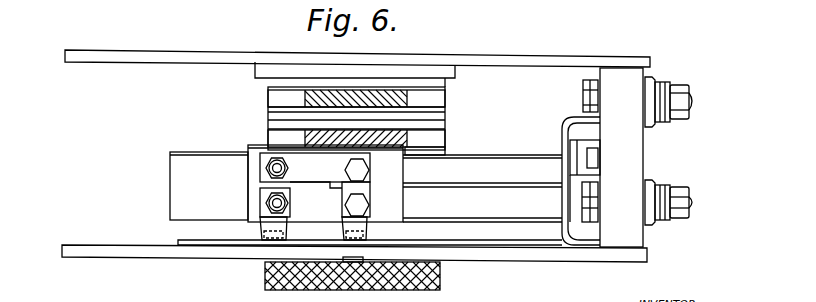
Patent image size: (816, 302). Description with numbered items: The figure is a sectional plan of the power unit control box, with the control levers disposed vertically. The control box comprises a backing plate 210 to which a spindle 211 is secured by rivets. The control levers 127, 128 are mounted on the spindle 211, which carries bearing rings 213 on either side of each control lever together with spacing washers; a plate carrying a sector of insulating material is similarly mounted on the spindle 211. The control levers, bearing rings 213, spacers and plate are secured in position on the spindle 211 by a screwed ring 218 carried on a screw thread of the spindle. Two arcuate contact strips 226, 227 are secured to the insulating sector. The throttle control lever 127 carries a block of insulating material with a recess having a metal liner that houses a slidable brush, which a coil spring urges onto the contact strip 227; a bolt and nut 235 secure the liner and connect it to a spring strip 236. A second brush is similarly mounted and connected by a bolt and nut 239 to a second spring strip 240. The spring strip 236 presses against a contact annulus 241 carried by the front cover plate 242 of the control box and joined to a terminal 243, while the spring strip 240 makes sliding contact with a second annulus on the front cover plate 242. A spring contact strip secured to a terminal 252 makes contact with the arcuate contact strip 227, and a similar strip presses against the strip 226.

The backing plate 210 is at (153, 58).
The spindle 211 is at (428, 73).
The bearing rings 213 is at (435, 93).
The control lever 128 is at (305, 100).
The throttle control lever 127 is at (322, 135).
The nut 235 is at (252, 147).
The nut 239 is at (268, 200).
The spring strip 236 is at (350, 235).
The second spring strip 240 is at (263, 233).
The screwed ring 218 is at (440, 278).
The arcuate contact strip 227 is at (482, 171).
The arcuate contact strip 226 is at (482, 208).
The contact annulus 241 is at (532, 245).
The front cover plate 242 is at (592, 255).
The terminal 243 is at (664, 96).
The terminal 252 is at (659, 226).